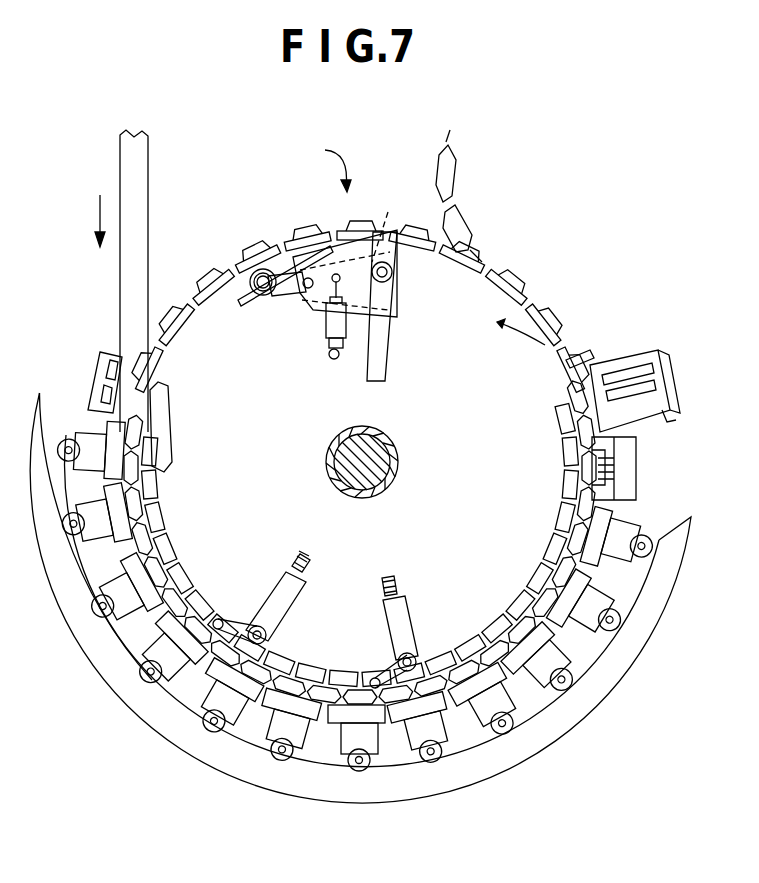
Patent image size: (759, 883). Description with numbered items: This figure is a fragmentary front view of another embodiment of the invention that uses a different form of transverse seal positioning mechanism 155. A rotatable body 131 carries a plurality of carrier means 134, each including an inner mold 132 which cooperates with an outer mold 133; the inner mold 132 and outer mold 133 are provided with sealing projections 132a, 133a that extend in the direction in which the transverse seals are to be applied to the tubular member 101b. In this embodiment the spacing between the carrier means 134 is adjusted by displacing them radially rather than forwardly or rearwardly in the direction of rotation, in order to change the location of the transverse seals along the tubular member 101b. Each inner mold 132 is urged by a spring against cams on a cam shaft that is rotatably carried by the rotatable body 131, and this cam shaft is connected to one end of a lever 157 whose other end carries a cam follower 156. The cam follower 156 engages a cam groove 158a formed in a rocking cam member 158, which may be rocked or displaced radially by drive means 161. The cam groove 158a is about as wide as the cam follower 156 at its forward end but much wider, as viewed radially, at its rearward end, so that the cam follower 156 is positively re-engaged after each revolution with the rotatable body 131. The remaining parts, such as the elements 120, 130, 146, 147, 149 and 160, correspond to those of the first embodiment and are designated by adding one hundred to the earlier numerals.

The tubular member 101b is at (150, 214).
The transfer device 120 is at (325, 156).
The shaft 130 is at (390, 492).
The rotatable body 131 is at (516, 494).
The inner mold 132 is at (152, 420).
The sealing projection 132a is at (588, 362).
The outer mold 133 is at (92, 378).
The sealing projection 133a is at (612, 468).
The carrier means 134 is at (473, 726).
The guide rail 146 is at (290, 778).
The guide roller 147 is at (270, 748).
The guide plate 149 is at (122, 722).
The transverse seal positioning mechanism 155 is at (402, 353).
The cam follower 156 is at (306, 296).
The lever 157 is at (286, 318).
The rocking cam member 158 is at (300, 255).
The cam groove 158a is at (390, 217).
The roller plate 160 is at (393, 280).
The drive means 161 is at (342, 352).